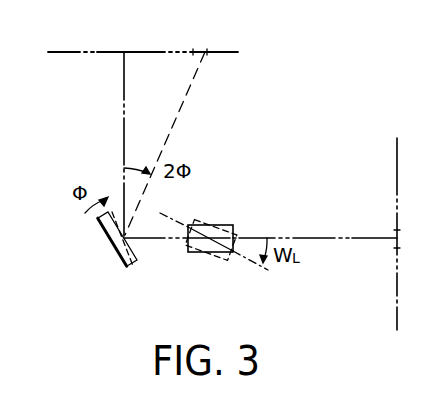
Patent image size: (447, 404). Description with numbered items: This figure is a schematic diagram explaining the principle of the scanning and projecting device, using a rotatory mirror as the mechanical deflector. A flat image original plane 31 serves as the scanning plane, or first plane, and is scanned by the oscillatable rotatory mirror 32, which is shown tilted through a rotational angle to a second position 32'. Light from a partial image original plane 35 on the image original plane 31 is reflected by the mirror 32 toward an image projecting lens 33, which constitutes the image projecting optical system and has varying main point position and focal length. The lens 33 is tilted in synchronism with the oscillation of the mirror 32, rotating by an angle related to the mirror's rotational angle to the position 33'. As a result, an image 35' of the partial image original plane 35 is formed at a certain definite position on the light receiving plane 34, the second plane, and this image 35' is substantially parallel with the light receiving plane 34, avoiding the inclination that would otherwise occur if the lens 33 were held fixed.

The flat image original plane 31 is at (221, 51).
The partial image original plane 35 is at (213, 71).
The image of partial image original plane 35' is at (418, 227).
The light receiving plane 34 is at (396, 302).
The rotatory mirror 32 is at (132, 253).
The tilted mirror position 32' is at (106, 253).
The image projecting lens 33 is at (226, 223).
The tilted lens position 33' is at (211, 259).